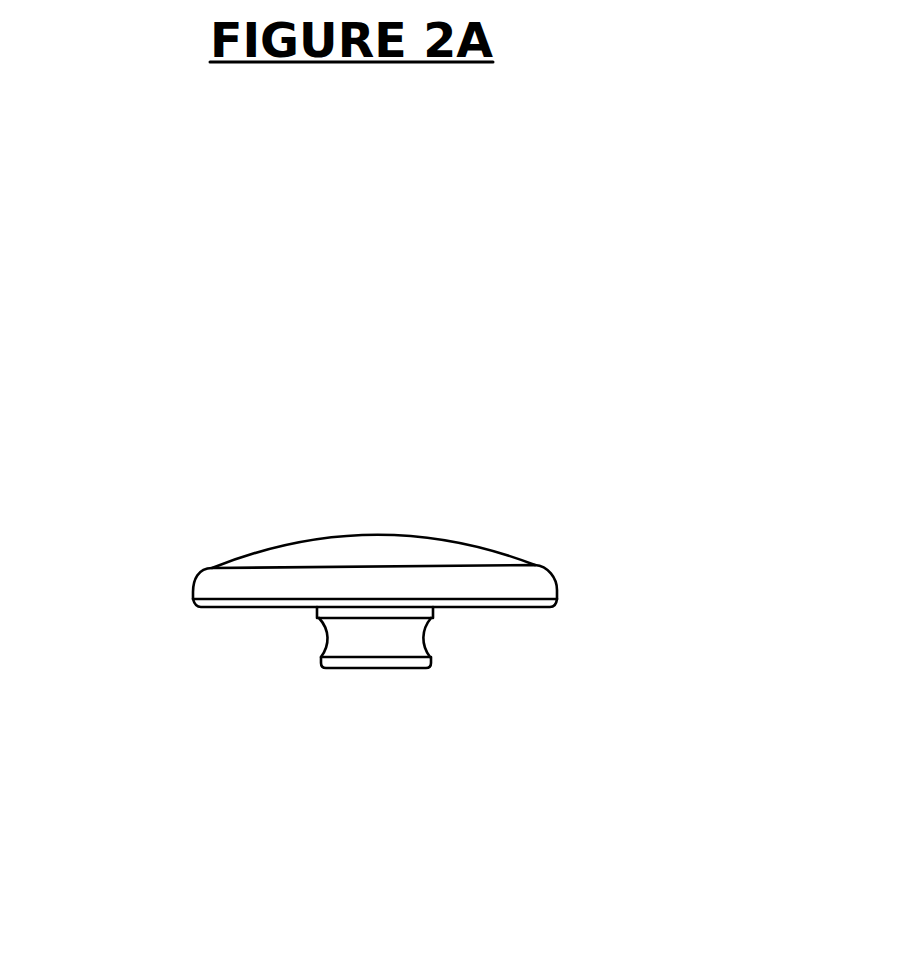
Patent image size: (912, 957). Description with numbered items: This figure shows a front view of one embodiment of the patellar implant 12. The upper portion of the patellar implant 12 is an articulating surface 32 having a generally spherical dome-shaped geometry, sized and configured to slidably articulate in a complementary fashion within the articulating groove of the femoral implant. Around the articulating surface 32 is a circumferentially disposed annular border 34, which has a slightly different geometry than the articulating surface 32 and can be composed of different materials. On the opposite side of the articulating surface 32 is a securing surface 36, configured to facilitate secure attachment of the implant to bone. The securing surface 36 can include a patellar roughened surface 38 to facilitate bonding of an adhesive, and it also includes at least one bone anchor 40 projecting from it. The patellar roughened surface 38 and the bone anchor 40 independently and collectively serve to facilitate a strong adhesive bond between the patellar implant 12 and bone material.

The patellar implant 12 is at (513, 428).
The articulating surface 32 is at (430, 552).
The annular border 34 is at (552, 577).
The securing surface 36 is at (475, 610).
The patellar roughened surface 38 is at (372, 638).
The bone anchor 40 is at (320, 637).